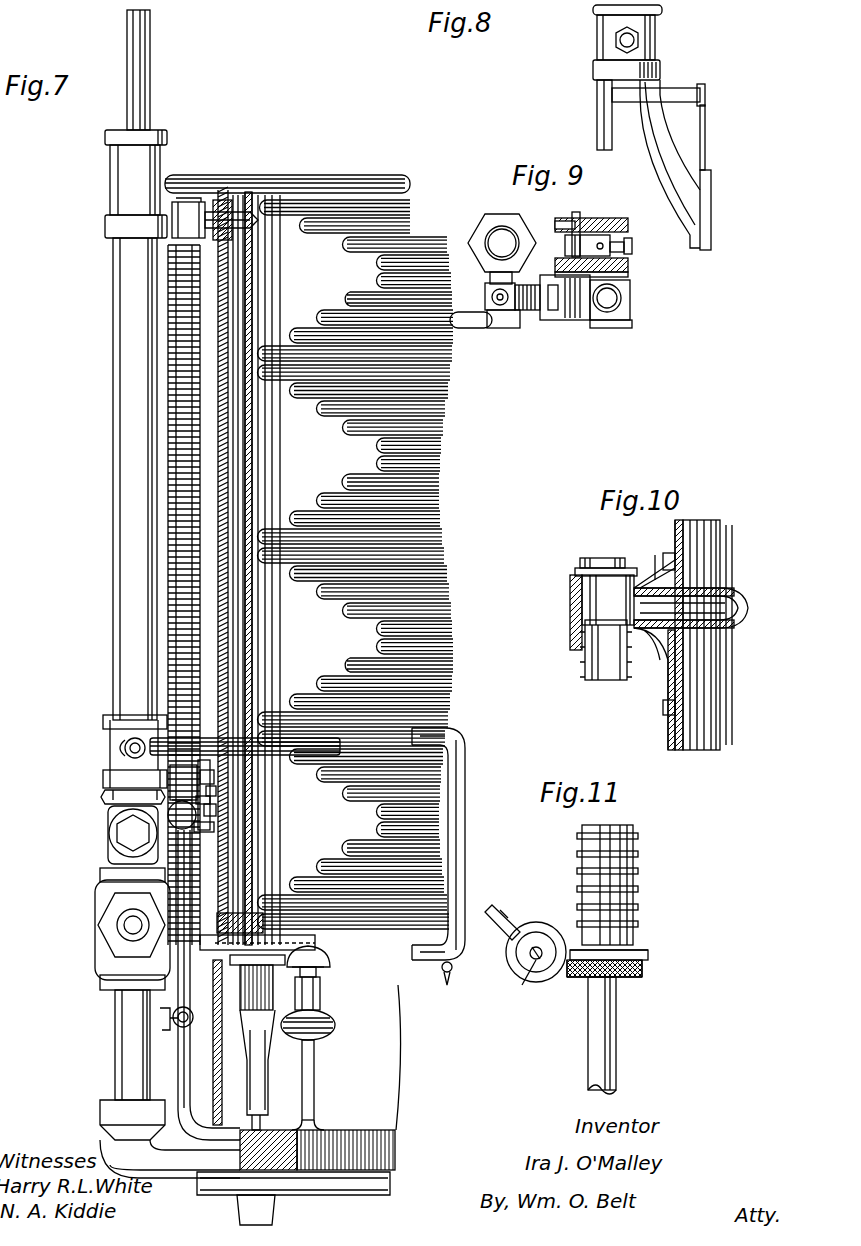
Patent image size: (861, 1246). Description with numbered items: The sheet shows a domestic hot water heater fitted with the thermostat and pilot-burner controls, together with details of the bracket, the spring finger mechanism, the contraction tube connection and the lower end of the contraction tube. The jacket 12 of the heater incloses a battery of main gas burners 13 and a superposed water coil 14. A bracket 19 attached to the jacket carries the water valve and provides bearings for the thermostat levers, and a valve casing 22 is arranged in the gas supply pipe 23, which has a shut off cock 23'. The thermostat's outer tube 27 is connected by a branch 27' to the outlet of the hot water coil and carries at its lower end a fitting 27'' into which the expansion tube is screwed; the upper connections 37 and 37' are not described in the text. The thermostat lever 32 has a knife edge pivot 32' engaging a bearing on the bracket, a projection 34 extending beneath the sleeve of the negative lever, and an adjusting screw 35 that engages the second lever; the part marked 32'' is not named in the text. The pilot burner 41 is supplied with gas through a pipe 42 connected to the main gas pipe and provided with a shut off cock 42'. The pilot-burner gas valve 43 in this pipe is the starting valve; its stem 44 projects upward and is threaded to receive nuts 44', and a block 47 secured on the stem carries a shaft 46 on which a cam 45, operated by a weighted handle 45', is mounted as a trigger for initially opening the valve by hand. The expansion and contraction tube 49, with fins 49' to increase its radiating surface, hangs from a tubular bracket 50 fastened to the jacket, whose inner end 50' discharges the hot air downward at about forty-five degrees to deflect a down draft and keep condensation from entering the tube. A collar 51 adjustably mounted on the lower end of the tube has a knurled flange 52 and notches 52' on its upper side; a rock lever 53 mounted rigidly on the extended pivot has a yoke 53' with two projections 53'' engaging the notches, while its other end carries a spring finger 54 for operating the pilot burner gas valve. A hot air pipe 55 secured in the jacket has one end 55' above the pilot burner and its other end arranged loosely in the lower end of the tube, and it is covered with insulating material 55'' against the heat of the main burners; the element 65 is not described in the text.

In FIG. 7, the jacket 12 is at (228, 462).
In FIG. 10, the jacket 12 is at (680, 750).
In FIG. 7, the main gas burners 13 is at (270, 1072).
In FIG. 7, the water coil 14 is at (445, 505).
In FIG. 7, the bracket 19 is at (190, 975).
In FIG. 8, the bracket 19 is at (711, 195).
In FIG. 9, the bracket 19 is at (630, 275).
In FIG. 7, the valve casing 22 is at (100, 940).
In FIG. 7, the gas supply pipe 23 is at (132, 984).
In FIG. 9, the gas supply pipe 23 is at (507, 234).
In FIG. 7, the shut off cock 23' is at (106, 835).
In FIG. 7, the outer tube 27 is at (118, 519).
In FIG. 7, the branch 27' is at (106, 749).
In FIG. 8, the branch 27' is at (647, 32).
In FIG. 7, the fitting 27'' is at (114, 781).
In FIG. 8, the fitting 27'' is at (597, 59).
In FIG. 8, the thermostat lever 32 is at (664, 151).
In FIG. 9, the knife edge pivot 32' is at (591, 219).
In FIG. 11, the knife edge pivot 32' is at (522, 983).
In FIG. 9, the bracket bar 32'' is at (638, 264).
In FIG. 9, the projection 34 is at (612, 236).
In FIG. 9, the adjusting screw 35 is at (633, 248).
In FIG. 7, the pipe 37 is at (159, 70).
In FIG. 7, the coupling 37' is at (111, 184).
In FIG. 7, the pilot burner 41 is at (335, 1024).
In FIG. 7, the pipe 42 is at (171, 1033).
In FIG. 7, the shut off cock 42' is at (101, 1031).
In FIG. 7, the gas valve 43 is at (182, 797).
In FIG. 9, the gas valve 43 is at (490, 282).
In FIG. 7, the stem 44 is at (245, 722).
In FIG. 9, the stem 44 is at (472, 296).
In FIG. 7, the nuts 44' is at (233, 782).
In FIG. 9, the nuts 44' is at (474, 314).
In FIG. 7, the cam 45 is at (250, 785).
In FIG. 7, the weighted handle 45' is at (231, 797).
In FIG. 9, the weighted handle 45' is at (467, 335).
In FIG. 7, the shaft 46 is at (216, 808).
In FIG. 7, the block 47 is at (210, 800).
In FIG. 7, the expansion and contraction tube 49 is at (227, 595).
In FIG. 10, the expansion and contraction tube 49 is at (607, 644).
In FIG. 11, the expansion and contraction tube 49 is at (626, 882).
In FIG. 7, the fins 49' is at (242, 595).
In FIG. 10, the fins 49' is at (578, 616).
In FIG. 11, the fins 49' is at (626, 880).
In FIG. 7, the tubular bracket 50 is at (204, 193).
In FIG. 10, the tubular bracket 50 is at (652, 635).
In FIG. 7, the inner end of bracket 50' is at (244, 226).
In FIG. 10, the inner end of bracket 50' is at (707, 611).
In FIG. 11, the collar 51 is at (638, 950).
In FIG. 11, the knurled flange 52 is at (619, 982).
In FIG. 11, the notches 52' is at (628, 980).
In FIG. 9, the rock lever 53 is at (565, 315).
In FIG. 11, the rock lever 53 is at (536, 935).
In FIG. 9, the yoke 53' is at (620, 312).
In FIG. 11, the yoke 53' is at (639, 937).
In FIG. 11, the projections 53'' is at (583, 1004).
In FIG. 9, the spring finger 54 is at (527, 312).
In FIG. 11, the spring finger 54 is at (505, 905).
In FIG. 7, the hot air pipe 55 is at (257, 904).
In FIG. 11, the hot air pipe 55 is at (625, 1035).
In FIG. 7, the end of hot air pipe 55' is at (329, 969).
In FIG. 7, the insulating material 55'' is at (331, 945).
In FIG. 7, the pipe 65 is at (228, 957).